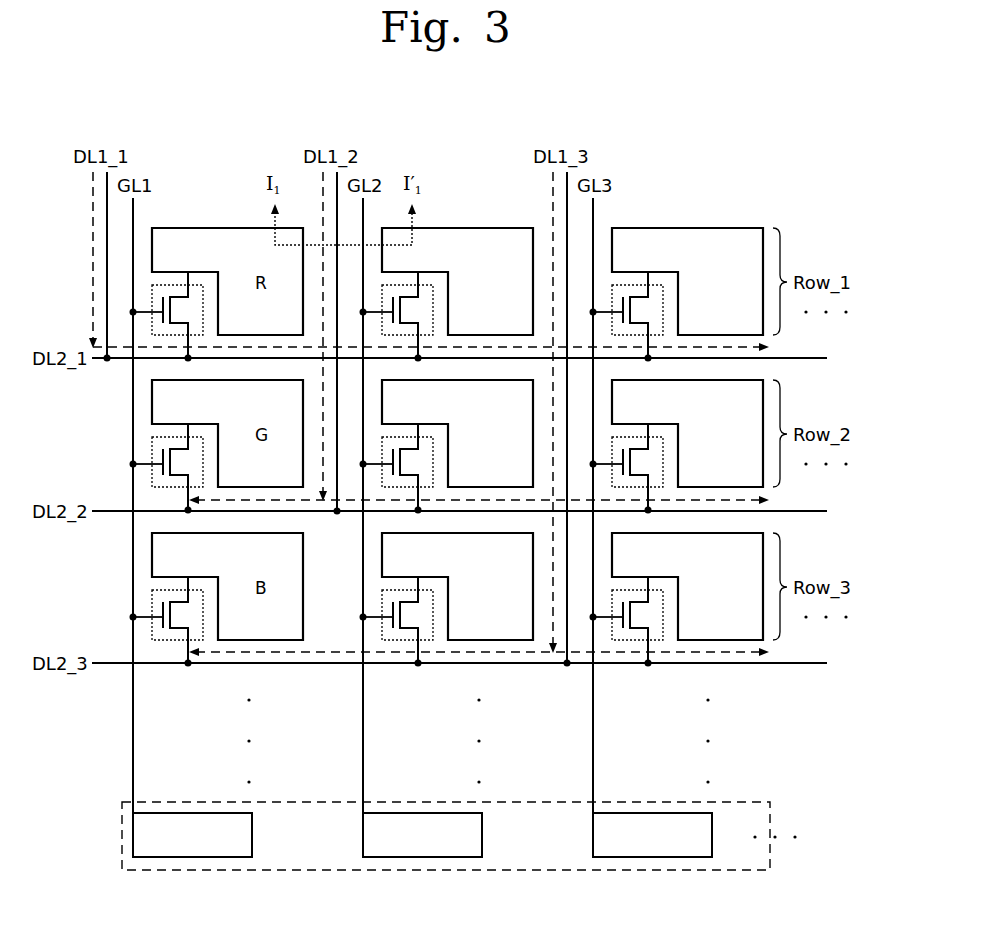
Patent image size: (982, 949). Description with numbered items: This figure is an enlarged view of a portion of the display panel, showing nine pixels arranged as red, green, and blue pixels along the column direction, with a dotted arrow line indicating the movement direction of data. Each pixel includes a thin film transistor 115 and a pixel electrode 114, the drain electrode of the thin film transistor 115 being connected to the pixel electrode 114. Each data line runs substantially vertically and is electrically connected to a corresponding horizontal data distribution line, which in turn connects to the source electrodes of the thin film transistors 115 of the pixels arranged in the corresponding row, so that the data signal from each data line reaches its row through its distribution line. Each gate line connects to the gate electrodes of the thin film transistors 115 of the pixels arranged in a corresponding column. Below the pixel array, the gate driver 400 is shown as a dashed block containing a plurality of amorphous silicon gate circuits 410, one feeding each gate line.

The pixel electrode 114 is at (705, 228).
The thin film transistor 115 is at (168, 287).
The gate driver 400 is at (459, 870).
The amorphous silicon gate circuit 410 is at (216, 857).